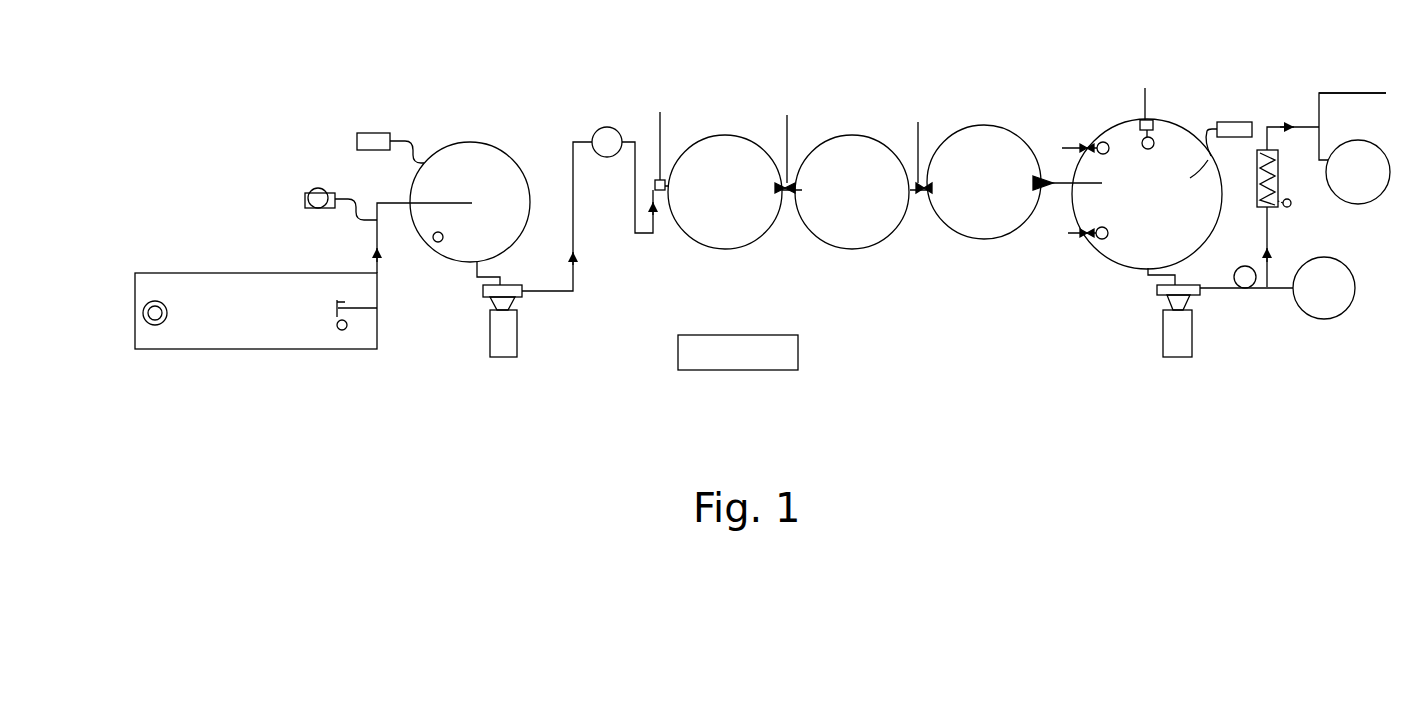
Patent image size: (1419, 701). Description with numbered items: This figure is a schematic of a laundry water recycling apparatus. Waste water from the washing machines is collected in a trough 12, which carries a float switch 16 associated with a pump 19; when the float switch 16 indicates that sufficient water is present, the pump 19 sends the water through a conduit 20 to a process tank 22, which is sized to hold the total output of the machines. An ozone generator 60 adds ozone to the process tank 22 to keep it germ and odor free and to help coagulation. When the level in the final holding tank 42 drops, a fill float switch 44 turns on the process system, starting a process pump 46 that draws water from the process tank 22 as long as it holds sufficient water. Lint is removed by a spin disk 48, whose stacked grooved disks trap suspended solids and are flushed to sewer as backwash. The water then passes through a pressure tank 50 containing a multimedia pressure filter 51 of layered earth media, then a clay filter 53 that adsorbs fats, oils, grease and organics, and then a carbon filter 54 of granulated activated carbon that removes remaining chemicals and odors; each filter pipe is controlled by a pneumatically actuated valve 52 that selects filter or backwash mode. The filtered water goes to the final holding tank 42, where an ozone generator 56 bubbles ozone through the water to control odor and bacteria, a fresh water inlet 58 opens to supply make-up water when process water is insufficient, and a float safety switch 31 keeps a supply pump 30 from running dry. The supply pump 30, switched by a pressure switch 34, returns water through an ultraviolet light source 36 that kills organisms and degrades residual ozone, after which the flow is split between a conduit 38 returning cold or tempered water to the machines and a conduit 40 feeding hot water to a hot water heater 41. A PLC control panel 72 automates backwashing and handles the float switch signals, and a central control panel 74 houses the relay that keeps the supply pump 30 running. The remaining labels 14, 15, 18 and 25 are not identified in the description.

The trough 12 is at (228, 351).
The liquid 14 is at (210, 247).
The intake 15 is at (336, 297).
The float switch 16 is at (337, 330).
The inlet 18 is at (145, 300).
The pump 19 is at (350, 310).
The conduit 20 is at (381, 280).
The process tank 22 is at (492, 140).
The pump 25 is at (304, 201).
The supply pump 30 is at (1183, 328).
The float safety switch 31 is at (1072, 233).
The pressure switch 34 is at (1249, 291).
The ultraviolet light source 36 is at (1292, 204).
The conduit 38 is at (1386, 92).
The conduit 40 is at (1394, 159).
The hot water heater 41 is at (1369, 184).
The final holding tank 42 is at (1180, 117).
The fill float switch 44 is at (1070, 143).
The process pump 46 is at (507, 345).
The spin disk 48 is at (607, 152).
The pressure tank 50 is at (1334, 301).
The multimedia pressure filter 51 is at (760, 243).
The pneumatically actuated valve 52 is at (663, 112).
The clay filter 53 is at (871, 248).
The carbon filter 54 is at (988, 242).
The ozone generator 56 is at (1239, 119).
The fresh water inlet 58 is at (1140, 96).
The ozone generator 60 is at (357, 146).
The PLC control panel 72 is at (445, 232).
The central control panel 74 is at (747, 357).